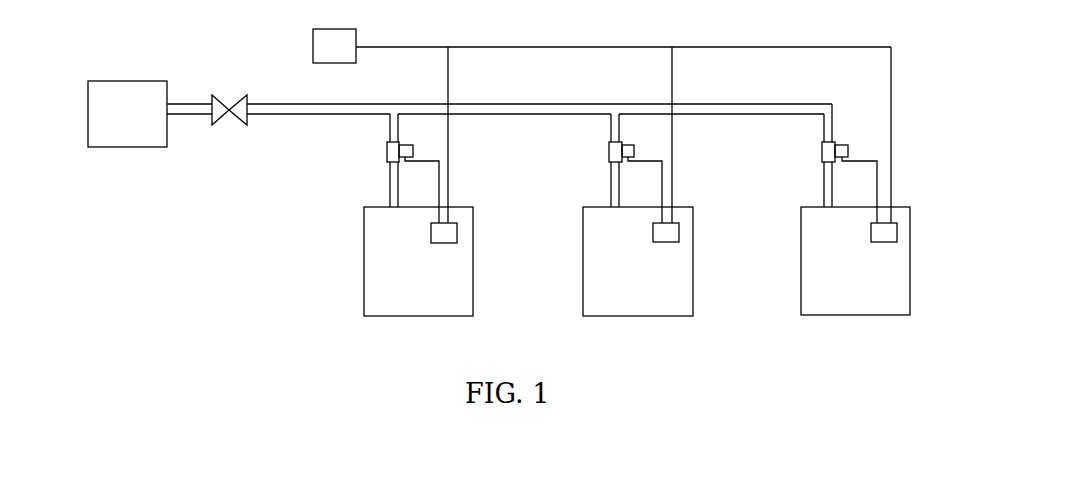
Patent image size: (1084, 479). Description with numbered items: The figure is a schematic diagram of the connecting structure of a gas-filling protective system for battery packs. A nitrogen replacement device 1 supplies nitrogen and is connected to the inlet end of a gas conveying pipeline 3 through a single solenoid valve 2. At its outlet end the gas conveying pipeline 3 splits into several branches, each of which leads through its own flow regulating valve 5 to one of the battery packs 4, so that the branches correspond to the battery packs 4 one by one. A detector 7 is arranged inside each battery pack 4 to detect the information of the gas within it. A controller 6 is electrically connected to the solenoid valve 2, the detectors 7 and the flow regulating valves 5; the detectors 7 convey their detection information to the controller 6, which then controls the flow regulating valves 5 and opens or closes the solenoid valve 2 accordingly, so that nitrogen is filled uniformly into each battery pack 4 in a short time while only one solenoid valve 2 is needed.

The nitrogen replacement device 1 is at (128, 125).
The solenoid valve 2 is at (215, 122).
The gas conveying pipeline 3 is at (343, 107).
The battery pack 4 is at (388, 287).
The flow regulating valve 5 is at (615, 153).
The controller 6 is at (330, 46).
The detector 7 is at (668, 233).